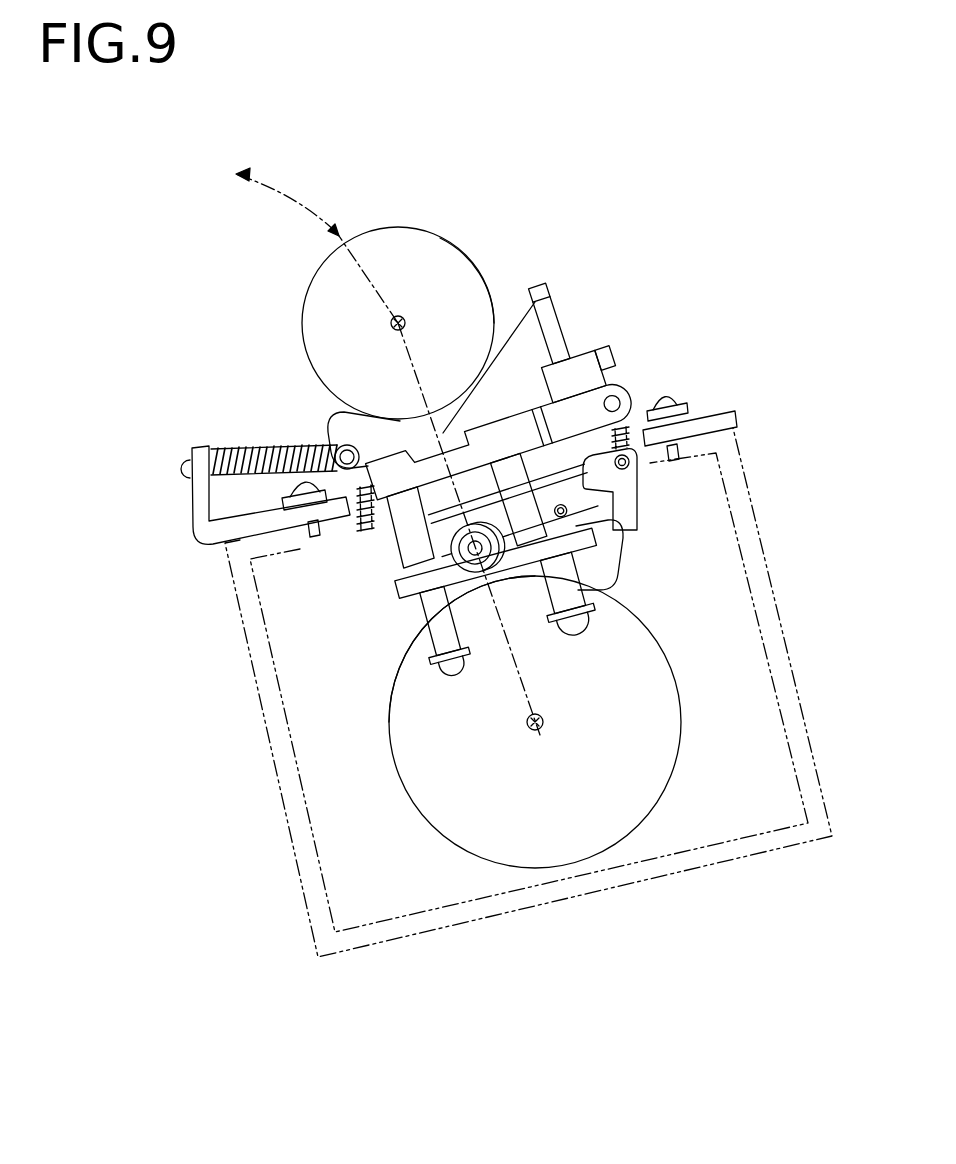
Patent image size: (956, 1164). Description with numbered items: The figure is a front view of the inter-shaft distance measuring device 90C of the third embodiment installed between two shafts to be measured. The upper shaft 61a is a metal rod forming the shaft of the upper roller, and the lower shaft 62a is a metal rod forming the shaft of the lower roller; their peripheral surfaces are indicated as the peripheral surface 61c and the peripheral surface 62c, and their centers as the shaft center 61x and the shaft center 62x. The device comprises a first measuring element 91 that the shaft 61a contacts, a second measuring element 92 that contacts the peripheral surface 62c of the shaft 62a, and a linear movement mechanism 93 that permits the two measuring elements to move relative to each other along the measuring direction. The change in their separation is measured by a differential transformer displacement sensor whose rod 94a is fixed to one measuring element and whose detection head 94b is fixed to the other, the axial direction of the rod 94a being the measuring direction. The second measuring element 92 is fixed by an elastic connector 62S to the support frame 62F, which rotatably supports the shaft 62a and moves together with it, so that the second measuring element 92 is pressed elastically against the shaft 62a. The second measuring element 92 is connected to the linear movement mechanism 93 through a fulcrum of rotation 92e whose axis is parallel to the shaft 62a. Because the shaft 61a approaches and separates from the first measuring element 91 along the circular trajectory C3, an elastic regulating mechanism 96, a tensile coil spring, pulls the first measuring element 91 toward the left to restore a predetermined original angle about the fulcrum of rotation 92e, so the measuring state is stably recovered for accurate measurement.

The circular trajectory C3 is at (297, 200).
The inter-shaft distance measuring device 90C is at (676, 288).
The shaft 61a is at (450, 251).
The first roller outer surface 61c is at (489, 283).
The first roller rotation axis 61x is at (401, 318).
The shaft 62a is at (423, 793).
The peripheral surface 62c is at (389, 727).
The second roller rotation axis 62x is at (535, 731).
The support frame 62F is at (315, 947).
The elastic connector 62S is at (355, 522).
The first measuring element 91 is at (334, 422).
The second measuring element 92 is at (596, 566).
The fulcrum of rotation 92e is at (476, 548).
The linear movement mechanism 93 is at (407, 553).
The rod 94a is at (553, 333).
The detection head 94b is at (566, 378).
The elastic regulating mechanism 96 is at (268, 448).